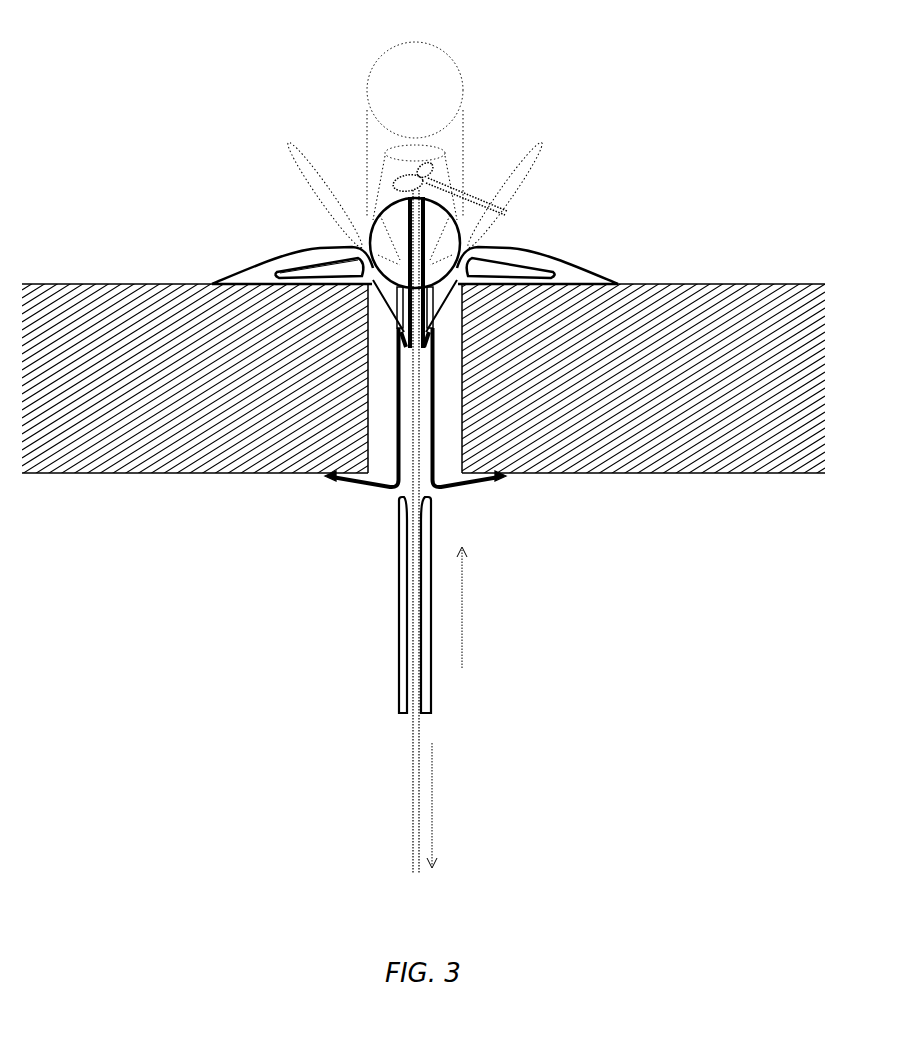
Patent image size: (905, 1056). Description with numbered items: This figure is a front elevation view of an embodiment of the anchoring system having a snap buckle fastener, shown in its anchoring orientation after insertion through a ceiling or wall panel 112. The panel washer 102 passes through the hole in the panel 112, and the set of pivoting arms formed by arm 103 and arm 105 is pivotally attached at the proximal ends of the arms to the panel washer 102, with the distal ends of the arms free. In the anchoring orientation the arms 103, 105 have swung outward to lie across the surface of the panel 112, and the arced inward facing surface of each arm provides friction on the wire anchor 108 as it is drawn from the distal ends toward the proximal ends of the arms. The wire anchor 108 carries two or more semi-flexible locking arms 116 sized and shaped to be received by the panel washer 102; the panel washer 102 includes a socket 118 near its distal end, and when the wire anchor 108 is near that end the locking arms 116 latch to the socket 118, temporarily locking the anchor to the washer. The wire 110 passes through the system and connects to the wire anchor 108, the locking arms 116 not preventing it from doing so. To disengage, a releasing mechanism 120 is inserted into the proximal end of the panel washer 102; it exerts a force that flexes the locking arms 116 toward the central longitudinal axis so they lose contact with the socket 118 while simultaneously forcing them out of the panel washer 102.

The panel washer 102 is at (447, 430).
The arm 103 is at (280, 257).
The arm 105 is at (543, 257).
The wire anchor 108 is at (467, 237).
The wire 110 is at (417, 752).
The panel 112 is at (127, 472).
The locking arms 116 is at (327, 273).
The socket 118 is at (563, 283).
The releasing mechanism 120 is at (398, 637).